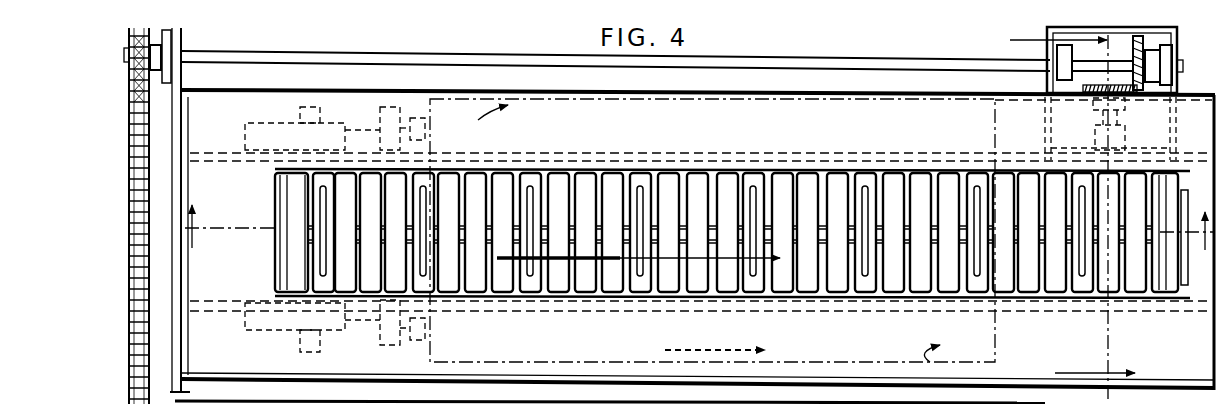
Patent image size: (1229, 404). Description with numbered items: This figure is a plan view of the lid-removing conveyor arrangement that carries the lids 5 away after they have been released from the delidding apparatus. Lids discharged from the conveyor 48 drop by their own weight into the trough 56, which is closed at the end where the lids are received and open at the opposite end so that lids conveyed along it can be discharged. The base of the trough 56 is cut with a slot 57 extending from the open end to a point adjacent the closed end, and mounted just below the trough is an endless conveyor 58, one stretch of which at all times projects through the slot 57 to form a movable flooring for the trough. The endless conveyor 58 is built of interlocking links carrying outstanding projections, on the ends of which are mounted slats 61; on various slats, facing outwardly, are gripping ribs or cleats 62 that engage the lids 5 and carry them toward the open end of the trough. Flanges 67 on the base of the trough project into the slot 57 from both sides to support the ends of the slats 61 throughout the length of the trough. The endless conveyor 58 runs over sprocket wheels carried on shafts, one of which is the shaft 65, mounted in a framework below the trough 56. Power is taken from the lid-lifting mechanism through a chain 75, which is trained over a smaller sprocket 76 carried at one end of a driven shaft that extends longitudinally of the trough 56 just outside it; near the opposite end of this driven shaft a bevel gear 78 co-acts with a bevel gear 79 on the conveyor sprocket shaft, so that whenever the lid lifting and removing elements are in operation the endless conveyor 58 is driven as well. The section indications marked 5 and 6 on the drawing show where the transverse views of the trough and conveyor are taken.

The conveyor 48 is at (268, 255).
The trough 56 is at (245, 100).
The slot 57 is at (884, 168).
The endless conveyor 58 is at (675, 292).
The slats 61 is at (530, 185).
The gripping ribs or cleats 62 is at (640, 185).
The shaft 65 is at (300, 350).
The flanges 67 is at (822, 180).
The chain 75 is at (128, 274).
The smaller sprocket 76 is at (124, 60).
The bevel gear 78 is at (1140, 38).
The bevel gear 79 is at (1078, 92).
The lid 5 is at (185, 228).
The section line 6- 6 is at (1061, 214).